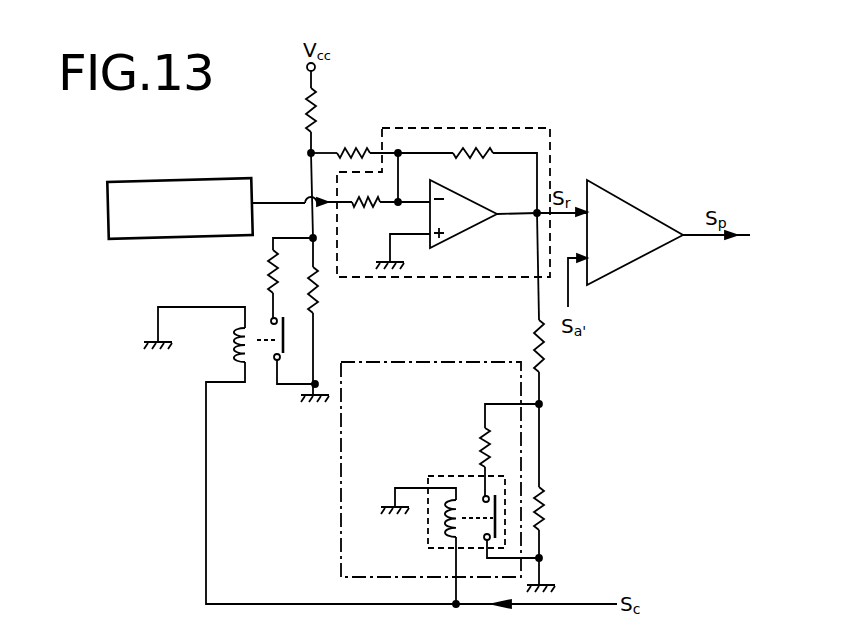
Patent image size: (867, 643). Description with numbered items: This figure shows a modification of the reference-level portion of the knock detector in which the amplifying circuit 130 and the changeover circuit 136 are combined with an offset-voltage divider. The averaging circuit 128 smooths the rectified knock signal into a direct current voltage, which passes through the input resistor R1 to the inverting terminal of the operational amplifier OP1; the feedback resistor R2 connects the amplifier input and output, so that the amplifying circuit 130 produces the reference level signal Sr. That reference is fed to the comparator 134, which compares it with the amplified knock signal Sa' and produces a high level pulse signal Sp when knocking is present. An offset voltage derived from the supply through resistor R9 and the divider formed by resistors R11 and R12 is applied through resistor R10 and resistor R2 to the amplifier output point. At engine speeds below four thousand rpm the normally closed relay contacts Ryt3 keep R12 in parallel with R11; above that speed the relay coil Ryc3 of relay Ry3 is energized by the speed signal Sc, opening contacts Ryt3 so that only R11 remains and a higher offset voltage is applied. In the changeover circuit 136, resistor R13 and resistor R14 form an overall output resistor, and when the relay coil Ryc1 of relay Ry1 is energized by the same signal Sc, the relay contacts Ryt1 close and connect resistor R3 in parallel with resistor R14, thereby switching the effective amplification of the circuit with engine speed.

The averaging circuit 128 is at (160, 180).
The amplifying circuit 130 is at (407, 128).
The comparator 134 is at (640, 210).
The changeover circuit 136 is at (430, 362).
The resistor R9 is at (308, 118).
The resistor R10 is at (354, 142).
The input resistor R1 is at (366, 192).
The feedback resistor R2 is at (473, 165).
The operational amplifier OP1 is at (452, 227).
The resistor R11 is at (320, 295).
The resistor R12 is at (256, 271).
The relay Ry3 is at (229, 350).
The relay contacts Ryt3 is at (268, 332).
The relay coil Ryc3 is at (243, 353).
The resistor R13 is at (557, 346).
The resistor R14 is at (558, 509).
The resistor R3 is at (473, 447).
The relay Ry1 is at (443, 475).
The relay contacts Ryt1 is at (497, 505).
The relay coil Ryc1 is at (445, 526).